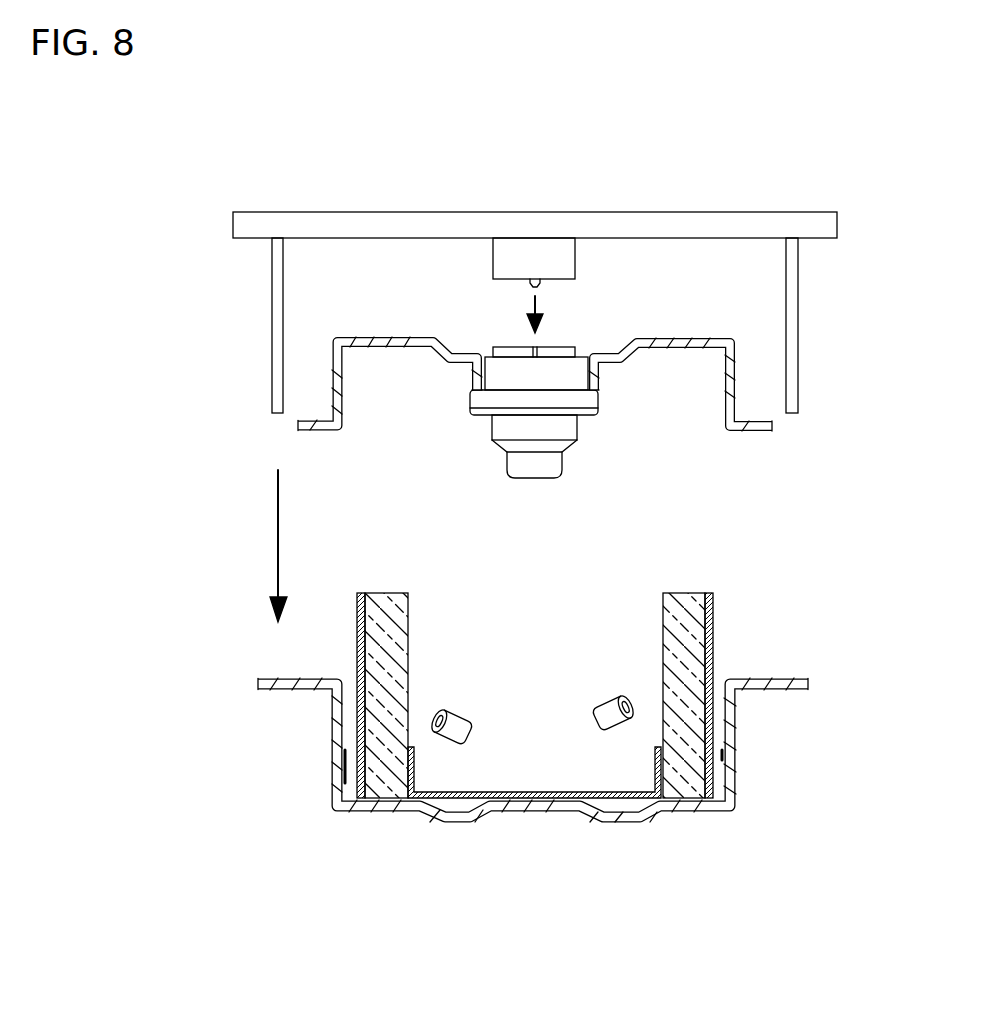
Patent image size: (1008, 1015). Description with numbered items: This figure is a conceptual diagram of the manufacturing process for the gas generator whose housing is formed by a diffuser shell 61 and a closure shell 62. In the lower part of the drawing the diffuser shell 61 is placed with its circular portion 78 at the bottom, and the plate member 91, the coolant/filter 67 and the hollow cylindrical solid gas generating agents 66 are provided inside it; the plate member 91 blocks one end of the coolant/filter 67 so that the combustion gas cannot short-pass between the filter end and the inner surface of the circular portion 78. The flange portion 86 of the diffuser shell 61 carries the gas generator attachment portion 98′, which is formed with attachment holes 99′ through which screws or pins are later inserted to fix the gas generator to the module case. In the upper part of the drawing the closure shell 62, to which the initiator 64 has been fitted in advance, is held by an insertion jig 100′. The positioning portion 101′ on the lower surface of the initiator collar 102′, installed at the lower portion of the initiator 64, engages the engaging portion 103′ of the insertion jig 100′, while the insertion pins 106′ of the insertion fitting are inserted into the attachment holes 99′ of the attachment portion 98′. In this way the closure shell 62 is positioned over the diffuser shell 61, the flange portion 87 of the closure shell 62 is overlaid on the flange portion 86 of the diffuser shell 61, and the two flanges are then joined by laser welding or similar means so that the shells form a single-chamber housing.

The insertion jig 100′ is at (545, 222).
The insertion pins 106′ is at (793, 358).
The engaging portion 103′ is at (537, 287).
The positioning portion 101′ is at (530, 349).
The initiator collar 102′ is at (558, 378).
The initiator 64 is at (547, 463).
The closure shell 62 is at (430, 340).
The flange portion 87 is at (305, 431).
The circular portion 78 is at (377, 812).
The flange portion 86 is at (310, 692).
The attachment holes 99′ is at (793, 678).
The gas generator attachment portion 98′ is at (768, 688).
The diffuser shell 61 is at (660, 823).
The plate member 91 is at (451, 803).
The coolant/filter 67 is at (710, 602).
The solid gas generating agents 66 is at (457, 730).